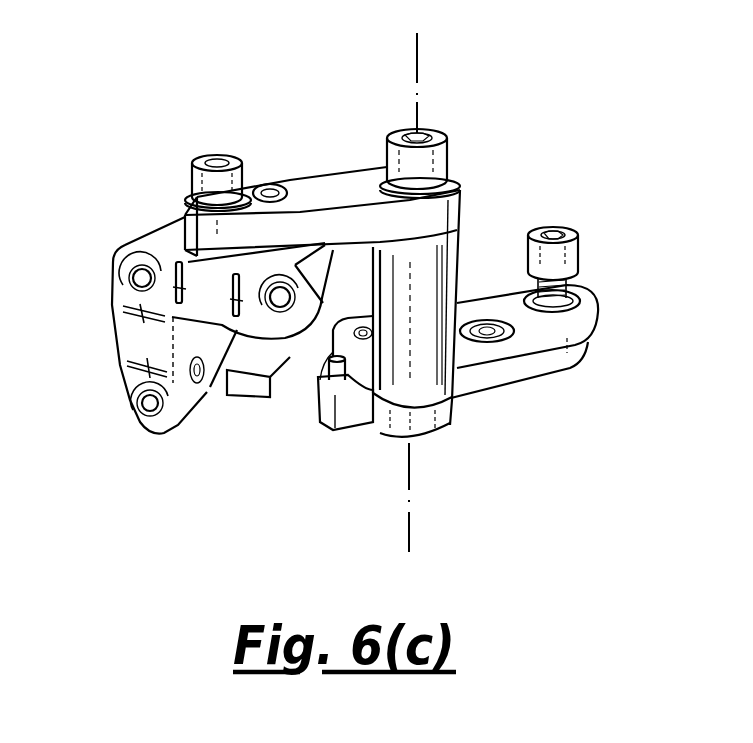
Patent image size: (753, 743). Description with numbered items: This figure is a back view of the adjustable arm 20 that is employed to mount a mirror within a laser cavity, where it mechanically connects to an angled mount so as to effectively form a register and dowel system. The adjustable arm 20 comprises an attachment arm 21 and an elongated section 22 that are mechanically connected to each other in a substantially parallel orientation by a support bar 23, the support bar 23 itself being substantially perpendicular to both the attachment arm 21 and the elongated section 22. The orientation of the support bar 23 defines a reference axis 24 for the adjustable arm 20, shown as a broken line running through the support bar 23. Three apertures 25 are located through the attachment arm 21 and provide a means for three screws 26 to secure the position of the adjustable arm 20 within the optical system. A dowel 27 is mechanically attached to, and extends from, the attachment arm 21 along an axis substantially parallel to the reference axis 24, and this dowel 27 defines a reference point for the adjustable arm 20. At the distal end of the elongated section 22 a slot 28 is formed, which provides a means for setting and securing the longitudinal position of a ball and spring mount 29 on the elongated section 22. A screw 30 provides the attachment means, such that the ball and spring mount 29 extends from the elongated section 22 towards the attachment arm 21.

The adjustable arm 20 is at (597, 157).
The attachment arm 21 is at (556, 358).
The elongated section 22 is at (333, 192).
The support bar 23 is at (407, 343).
The reference axis 24 is at (420, 50).
The apertures 25 is at (575, 287).
The screws 26 is at (573, 258).
The dowel 27 is at (328, 378).
The slot 28 is at (271, 184).
The ball and spring mount 29 is at (147, 338).
The screw 30 is at (188, 183).